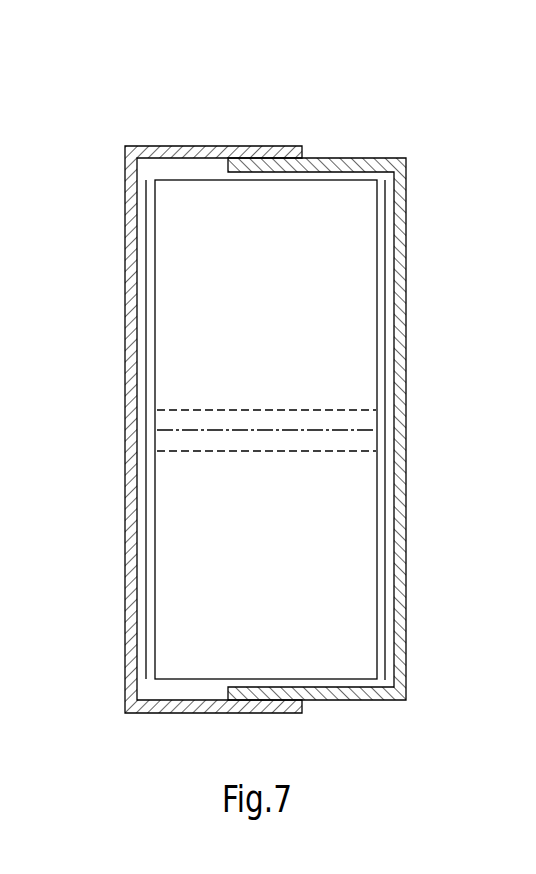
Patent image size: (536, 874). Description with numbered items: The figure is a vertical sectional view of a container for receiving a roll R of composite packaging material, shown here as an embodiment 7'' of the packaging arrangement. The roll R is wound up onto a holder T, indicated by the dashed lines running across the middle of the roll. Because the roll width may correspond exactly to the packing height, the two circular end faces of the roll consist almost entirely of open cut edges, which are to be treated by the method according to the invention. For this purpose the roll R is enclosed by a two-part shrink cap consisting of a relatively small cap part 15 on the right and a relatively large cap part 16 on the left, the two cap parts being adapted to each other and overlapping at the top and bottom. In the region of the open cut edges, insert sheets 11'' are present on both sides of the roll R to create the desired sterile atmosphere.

The heat exchanger / battery housing assembly 7'' is at (265, 371).
The relatively large cap part 16 is at (167, 146).
The relatively small cap part 15 is at (407, 248).
The insert sheets 11'' is at (265, 430).
The roll R is at (273, 323).
The holder T is at (330, 452).